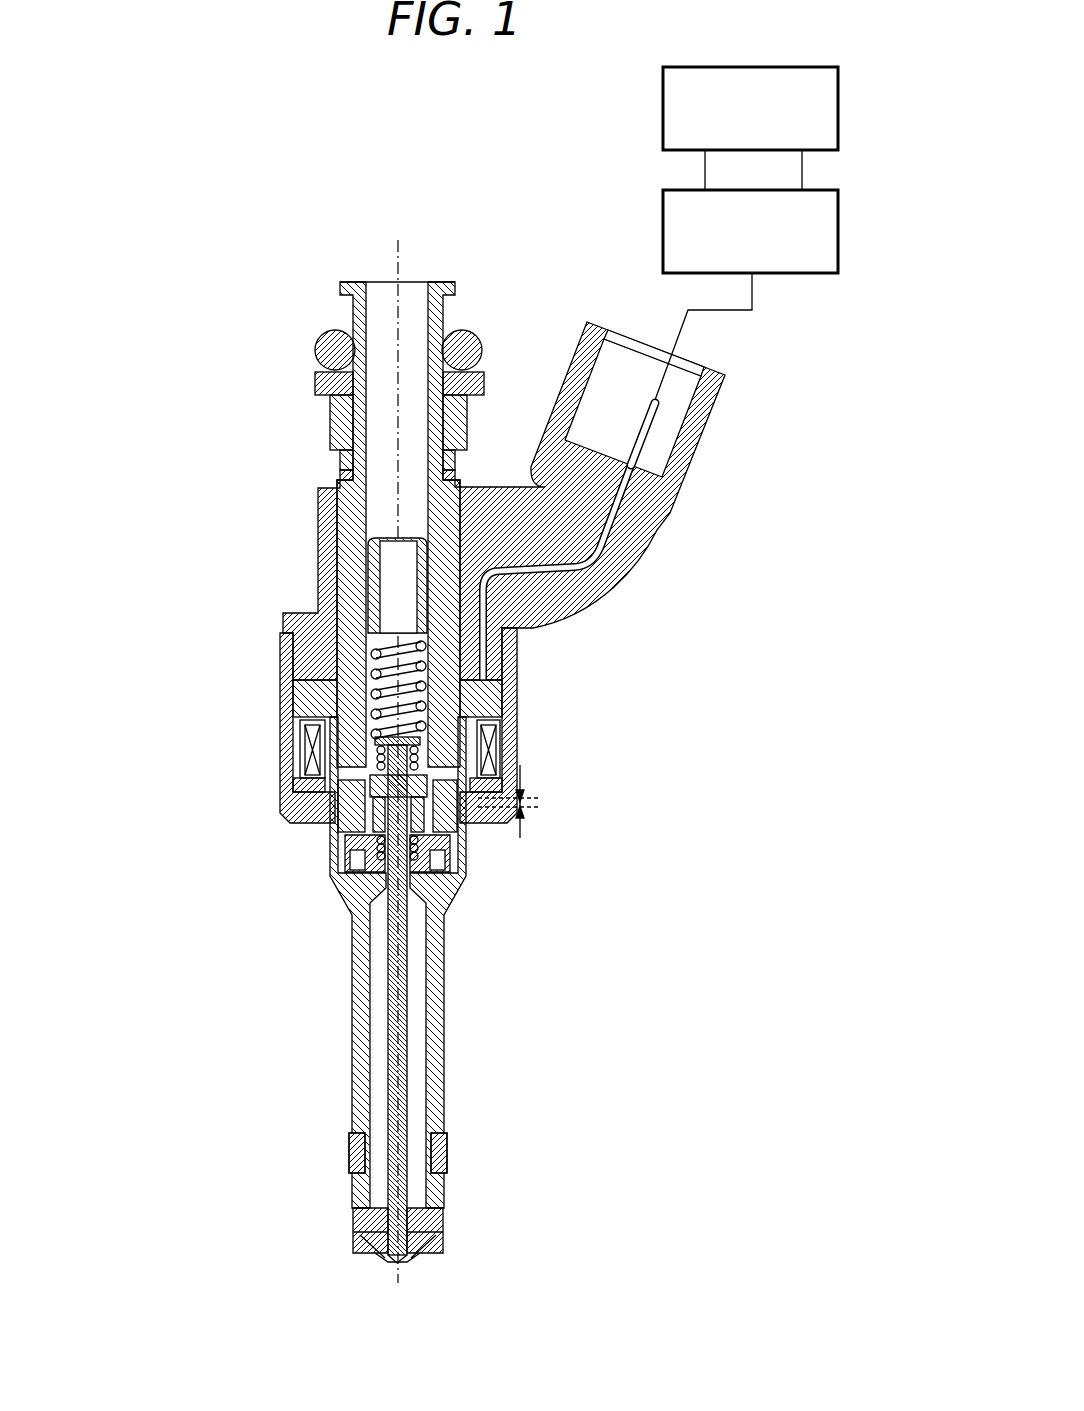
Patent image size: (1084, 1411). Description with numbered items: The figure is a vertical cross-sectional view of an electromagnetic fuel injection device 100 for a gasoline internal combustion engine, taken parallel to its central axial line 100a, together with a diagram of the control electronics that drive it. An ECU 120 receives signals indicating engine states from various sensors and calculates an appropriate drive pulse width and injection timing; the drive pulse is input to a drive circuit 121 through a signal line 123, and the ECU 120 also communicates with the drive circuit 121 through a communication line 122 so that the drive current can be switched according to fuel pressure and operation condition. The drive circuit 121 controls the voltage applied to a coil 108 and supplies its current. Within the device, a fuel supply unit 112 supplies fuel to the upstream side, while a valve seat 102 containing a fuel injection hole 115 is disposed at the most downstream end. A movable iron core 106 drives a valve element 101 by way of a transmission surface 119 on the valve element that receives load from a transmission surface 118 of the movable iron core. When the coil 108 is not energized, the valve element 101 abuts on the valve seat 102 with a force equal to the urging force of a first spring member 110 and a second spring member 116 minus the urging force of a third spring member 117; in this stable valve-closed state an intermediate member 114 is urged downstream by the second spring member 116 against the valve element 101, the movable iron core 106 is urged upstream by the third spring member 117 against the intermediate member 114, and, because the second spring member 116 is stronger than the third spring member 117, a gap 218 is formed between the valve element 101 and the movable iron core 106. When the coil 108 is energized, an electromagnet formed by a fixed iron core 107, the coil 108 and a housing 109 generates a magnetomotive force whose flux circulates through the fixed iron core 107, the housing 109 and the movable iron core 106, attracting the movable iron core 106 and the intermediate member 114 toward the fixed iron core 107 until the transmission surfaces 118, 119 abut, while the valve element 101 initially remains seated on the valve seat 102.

The fuel injection device 100 is at (461, 734).
The central axial line 100a is at (398, 278).
The valve element 101 is at (408, 1065).
The valve seat 102 is at (353, 1247).
The movable iron core 106 is at (320, 826).
The fixed iron core 107 is at (517, 747).
The coil 108 is at (283, 677).
The housing 109 is at (517, 700).
The first spring member 110 is at (517, 653).
The fuel supply unit 112 is at (417, 300).
The intermediate member 114 is at (332, 772).
The fuel injection hole 115 is at (400, 1258).
The second spring member 116 is at (323, 760).
The third spring member 117 is at (327, 903).
The transmission surface of the movable iron core 118 is at (327, 853).
The transmission surface of the valve element 119 is at (462, 878).
The ECU 120 is at (672, 97).
The drive circuit 121 is at (808, 172).
The communication line 122 is at (795, 265).
The signal line 123 is at (703, 165).
The gap 218 is at (523, 832).